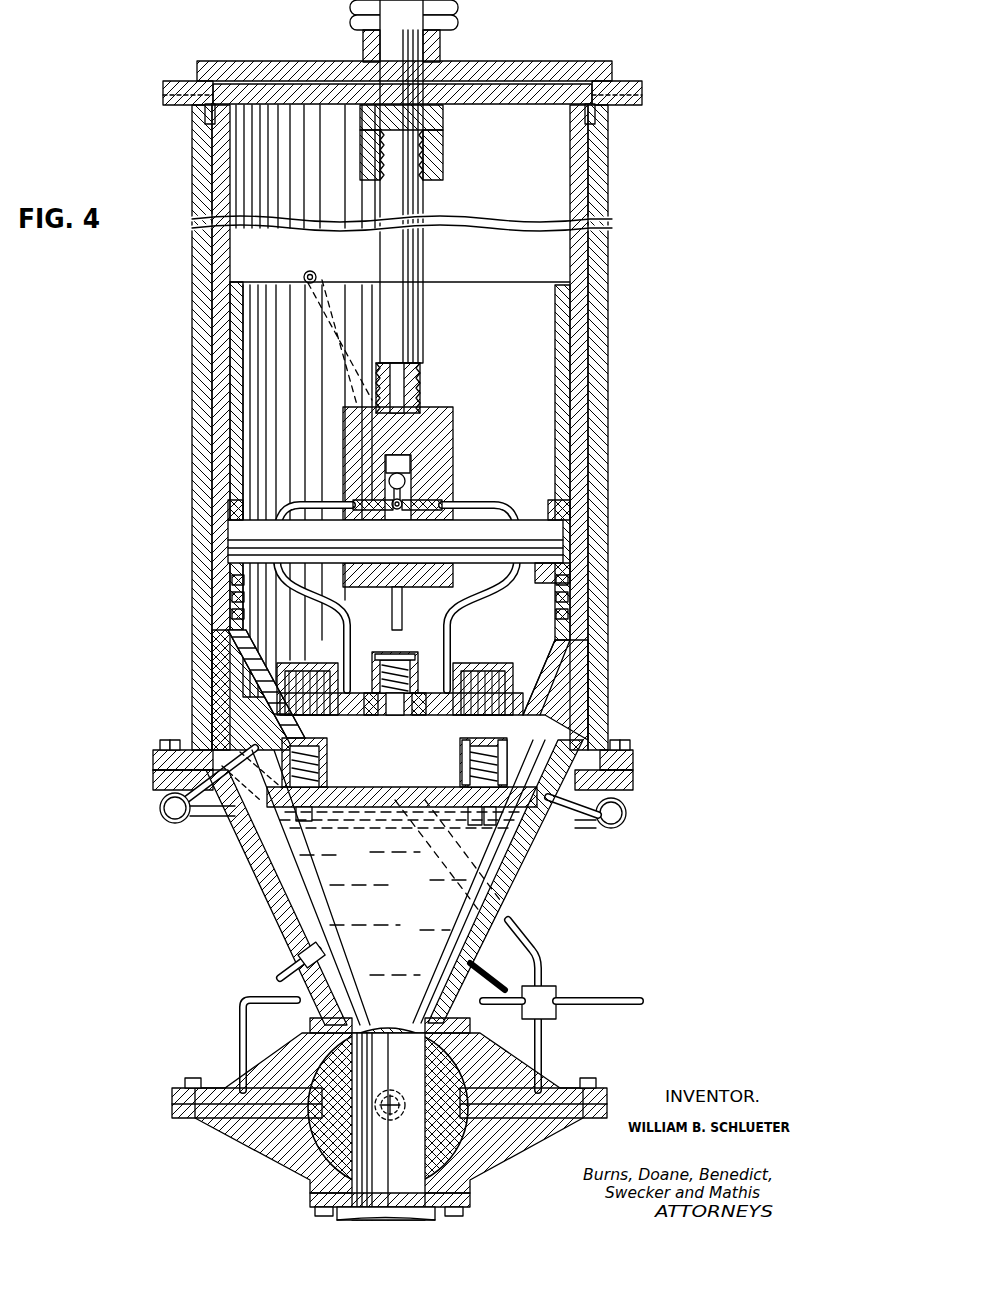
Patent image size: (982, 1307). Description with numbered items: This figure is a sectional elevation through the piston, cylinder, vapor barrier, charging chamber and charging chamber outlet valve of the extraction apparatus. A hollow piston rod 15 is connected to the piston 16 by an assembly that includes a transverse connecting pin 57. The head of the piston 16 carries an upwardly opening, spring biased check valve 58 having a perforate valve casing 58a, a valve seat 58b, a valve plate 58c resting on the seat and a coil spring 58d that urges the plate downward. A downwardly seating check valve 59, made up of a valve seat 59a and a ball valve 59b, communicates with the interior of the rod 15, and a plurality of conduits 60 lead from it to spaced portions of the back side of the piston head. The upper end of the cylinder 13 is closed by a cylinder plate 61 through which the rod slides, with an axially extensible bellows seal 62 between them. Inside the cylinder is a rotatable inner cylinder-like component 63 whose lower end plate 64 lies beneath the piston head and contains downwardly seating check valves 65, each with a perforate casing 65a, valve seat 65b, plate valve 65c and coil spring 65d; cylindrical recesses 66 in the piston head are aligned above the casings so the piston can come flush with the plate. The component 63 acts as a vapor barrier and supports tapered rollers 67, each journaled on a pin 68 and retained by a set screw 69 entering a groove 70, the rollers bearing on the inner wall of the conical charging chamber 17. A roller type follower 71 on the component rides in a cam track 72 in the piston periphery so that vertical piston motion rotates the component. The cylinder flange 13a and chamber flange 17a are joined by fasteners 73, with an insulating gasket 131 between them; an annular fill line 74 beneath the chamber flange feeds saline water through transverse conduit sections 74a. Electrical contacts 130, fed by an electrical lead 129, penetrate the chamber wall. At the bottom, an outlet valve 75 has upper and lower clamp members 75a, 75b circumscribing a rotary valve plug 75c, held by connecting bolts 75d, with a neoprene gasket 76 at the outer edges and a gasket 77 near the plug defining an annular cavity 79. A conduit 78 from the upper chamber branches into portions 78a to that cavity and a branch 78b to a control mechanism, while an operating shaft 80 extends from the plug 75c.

The cylinder 13 is at (600, 374).
The cylinder flange 13a is at (634, 766).
The piston rod 15 is at (404, 64).
The piston 16 is at (556, 338).
The charging chamber 17 is at (530, 884).
The chamber flange 17a is at (634, 789).
The transverse connecting pin 57 is at (524, 535).
The check valve 58 is at (410, 660).
The perforate valve casing 58a is at (378, 656).
The valve seat 58b is at (395, 716).
The valve plate 58c is at (372, 716).
The coil spring 58d is at (422, 716).
The check valve 59 is at (385, 468).
The valve seat 59a is at (412, 483).
The ball valve 59b is at (412, 462).
The conduits 60 is at (320, 500).
The cylinder plate 61 is at (553, 62).
The bellows seal 62 is at (350, 10).
The inner cylinder-like component 63 is at (572, 265).
The lower end plate 64 is at (402, 797).
The check valves 65 is at (505, 737).
The perforate casing 65a is at (460, 757).
The valve seat 65b is at (474, 812).
The plate valve 65c is at (490, 812).
The coil spring 65d is at (507, 755).
The cylindrical recesses 66 is at (492, 666).
The tapered rollers 67 is at (280, 876).
The pin 68 is at (211, 722).
The set screw 69 is at (252, 758).
The groove 70 is at (232, 786).
The roller type follower 71 is at (316, 278).
The cam track 72 is at (340, 370).
The fasteners 73 is at (166, 746).
The annular fill line 74 is at (628, 815).
The transverse conduit sections 74a is at (588, 825).
The outlet valve 75 is at (230, 1080).
The upper clamp member 75a is at (556, 1092).
The lower clamp member 75b is at (533, 1135).
The rotary valve plug 75c is at (440, 1134).
The connecting bolts 75d is at (590, 1095).
The neoprene gasket 76 is at (175, 1106).
The gasket 77 is at (495, 1170).
The conduit 78 is at (515, 942).
The branch conduit portions 78a is at (243, 998).
The branch conduit 78b is at (592, 1000).
The annular cavity 79 is at (515, 1150).
The operating shaft 80 is at (393, 1112).
The electrical lead 129 is at (283, 968).
The electrical contacts 130 is at (310, 968).
The insulating gasket 131 is at (153, 770).